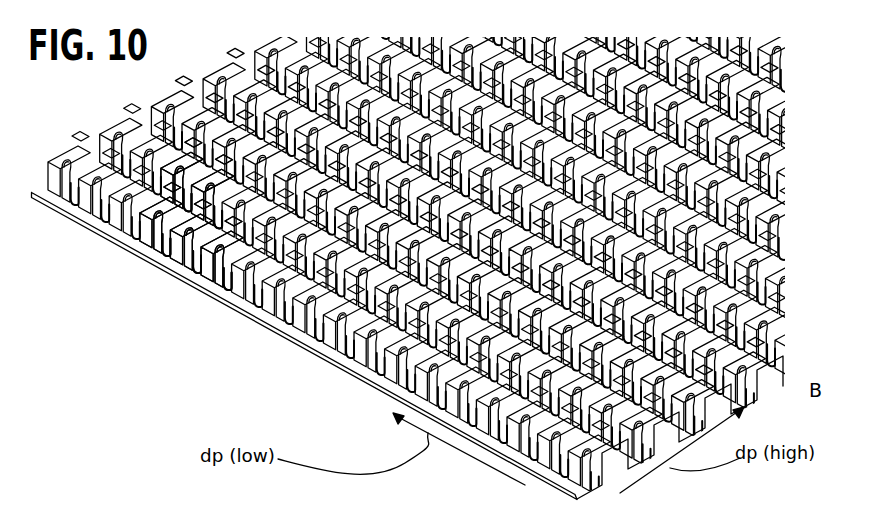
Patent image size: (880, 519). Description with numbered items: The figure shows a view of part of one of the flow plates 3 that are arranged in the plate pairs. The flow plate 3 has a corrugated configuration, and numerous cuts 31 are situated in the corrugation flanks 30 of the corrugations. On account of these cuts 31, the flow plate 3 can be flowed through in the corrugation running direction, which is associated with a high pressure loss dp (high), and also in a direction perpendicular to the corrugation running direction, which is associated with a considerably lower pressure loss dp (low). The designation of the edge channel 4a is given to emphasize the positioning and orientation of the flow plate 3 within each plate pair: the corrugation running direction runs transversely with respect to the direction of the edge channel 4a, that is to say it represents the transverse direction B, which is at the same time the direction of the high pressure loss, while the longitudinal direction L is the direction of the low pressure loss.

The flow plate 3 is at (150, 208).
The corrugation flank 30 is at (213, 213).
The cut 31 is at (235, 280).
The edge channel 4a is at (243, 386).